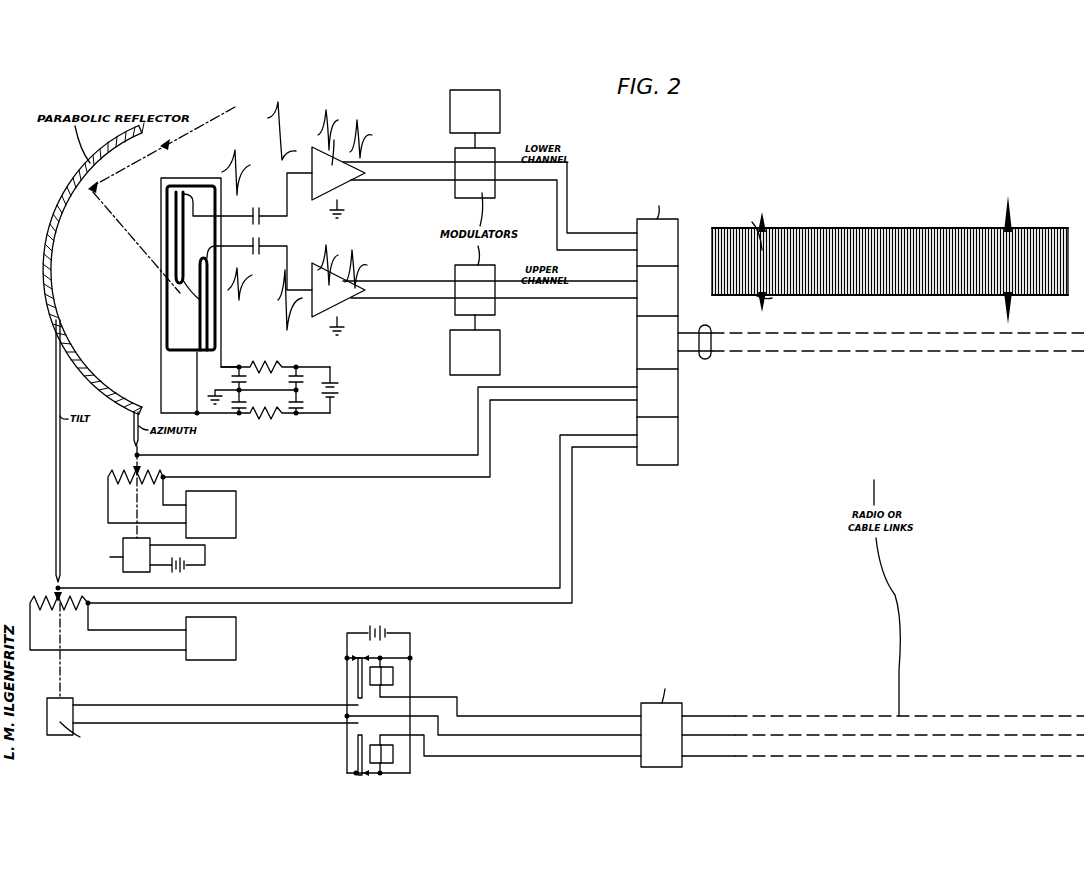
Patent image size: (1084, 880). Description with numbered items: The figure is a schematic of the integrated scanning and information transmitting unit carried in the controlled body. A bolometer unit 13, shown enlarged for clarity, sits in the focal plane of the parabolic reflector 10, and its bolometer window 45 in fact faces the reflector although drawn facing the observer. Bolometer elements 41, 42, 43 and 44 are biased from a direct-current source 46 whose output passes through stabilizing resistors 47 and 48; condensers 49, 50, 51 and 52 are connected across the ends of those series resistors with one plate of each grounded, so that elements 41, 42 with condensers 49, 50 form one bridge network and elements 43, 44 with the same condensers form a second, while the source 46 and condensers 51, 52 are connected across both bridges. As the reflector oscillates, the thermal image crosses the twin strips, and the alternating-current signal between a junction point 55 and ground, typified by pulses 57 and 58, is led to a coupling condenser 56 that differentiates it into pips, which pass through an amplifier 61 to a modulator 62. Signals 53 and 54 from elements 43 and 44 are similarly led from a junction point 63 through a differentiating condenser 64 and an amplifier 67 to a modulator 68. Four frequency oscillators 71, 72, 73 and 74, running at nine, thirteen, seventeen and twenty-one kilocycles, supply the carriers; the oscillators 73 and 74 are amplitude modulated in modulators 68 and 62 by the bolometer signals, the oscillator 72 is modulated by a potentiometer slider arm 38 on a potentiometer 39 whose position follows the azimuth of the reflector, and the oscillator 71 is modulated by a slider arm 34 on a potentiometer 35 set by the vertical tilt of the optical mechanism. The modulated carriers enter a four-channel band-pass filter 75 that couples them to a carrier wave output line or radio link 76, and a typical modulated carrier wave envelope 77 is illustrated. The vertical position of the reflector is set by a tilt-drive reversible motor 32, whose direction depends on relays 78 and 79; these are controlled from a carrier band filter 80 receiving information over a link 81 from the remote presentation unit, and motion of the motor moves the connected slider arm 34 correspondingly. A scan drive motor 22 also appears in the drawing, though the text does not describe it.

The parabolic reflector 10 is at (54, 277).
The bolometer unit 13 is at (190, 367).
The scan drive motor 22 is at (150, 542).
The tilt-drive reversible motor 32 is at (68, 698).
The potentiometer slider arm 34 is at (54, 586).
The potentiometer 35 is at (82, 603).
The potentiometer slider arm 38 is at (130, 466).
The potentiometer 39 is at (156, 478).
The bolometer element 41 is at (176, 220).
The bolometer element 42 is at (200, 210).
The bolometer element 43 is at (200, 310).
The bolometer element 44 is at (207, 318).
The bolometer window 45 is at (183, 332).
The direct-current source 46 is at (338, 390).
The stabilizing resistor 47 is at (264, 418).
The stabilizing resistor 48 is at (276, 360).
The condenser 49 is at (240, 415).
The condenser 50 is at (232, 380).
The condenser 51 is at (300, 372).
The condenser 52 is at (300, 404).
The alternating-current signal 53 is at (242, 290).
The alternating-current signal 54 is at (292, 300).
The junction point 55 is at (178, 288).
The coupling condenser 56 is at (256, 210).
The alternating-current signal pulse 57 is at (236, 152).
The alternating-current signal pulse 58 is at (270, 108).
The amplifier 61 is at (339, 164).
The modulator 62 is at (495, 190).
The junction point 63 is at (212, 248).
The condenser 64 is at (256, 242).
The amplifier 67 is at (344, 310).
The modulator 68 is at (495, 305).
The frequency oscillator 71 is at (236, 637).
The frequency oscillator 72 is at (236, 510).
The frequency oscillator 73 is at (502, 346).
The frequency oscillator 74 is at (500, 97).
The four-channel band-pass filter 75 is at (654, 465).
The carrier wave output line or radio link 76 is at (780, 355).
The carrier output wave envelope 77 is at (843, 296).
The relay 78 is at (393, 758).
The relay 79 is at (393, 678).
The carrier band filter 80 is at (655, 767).
The link 81 is at (786, 758).